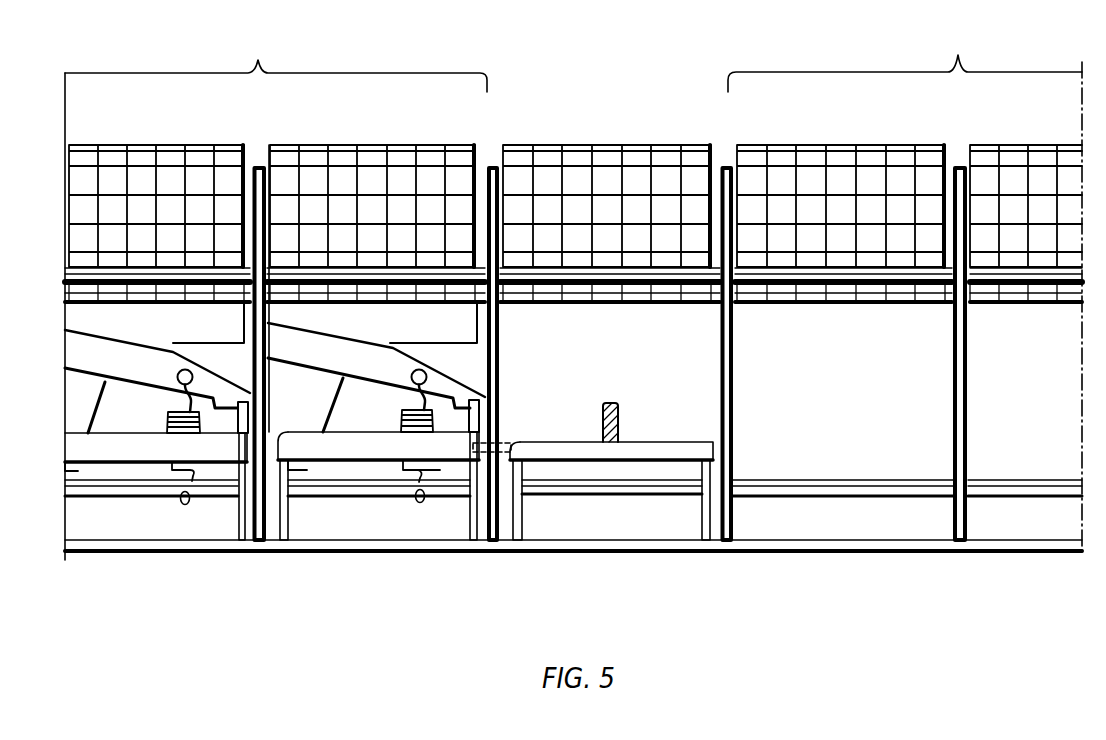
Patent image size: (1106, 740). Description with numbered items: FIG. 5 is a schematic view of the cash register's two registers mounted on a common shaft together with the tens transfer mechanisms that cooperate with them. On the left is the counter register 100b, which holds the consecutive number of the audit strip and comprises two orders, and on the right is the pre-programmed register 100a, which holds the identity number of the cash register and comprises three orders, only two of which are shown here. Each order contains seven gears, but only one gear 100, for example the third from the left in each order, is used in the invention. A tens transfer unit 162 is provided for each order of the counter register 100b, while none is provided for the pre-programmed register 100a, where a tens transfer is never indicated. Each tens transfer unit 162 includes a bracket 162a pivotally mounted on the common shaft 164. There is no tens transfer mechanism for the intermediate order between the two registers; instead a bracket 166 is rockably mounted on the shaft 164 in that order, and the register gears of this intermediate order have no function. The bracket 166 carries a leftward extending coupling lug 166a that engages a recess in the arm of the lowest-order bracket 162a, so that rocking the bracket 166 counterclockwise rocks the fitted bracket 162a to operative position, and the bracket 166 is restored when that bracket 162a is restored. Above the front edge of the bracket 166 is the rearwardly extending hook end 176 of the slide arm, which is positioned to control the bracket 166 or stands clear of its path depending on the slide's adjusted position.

The gear 100 is at (1047, 163).
The pre-programmed register 100a is at (905, 60).
The counter register 100b is at (276, 60).
The tens transfer unit 162 is at (403, 503).
The bracket 162a is at (281, 603).
The common shaft 164 is at (885, 485).
The bracket 166 is at (673, 448).
The coupling lug 166a is at (503, 450).
The hook end 176 is at (602, 436).